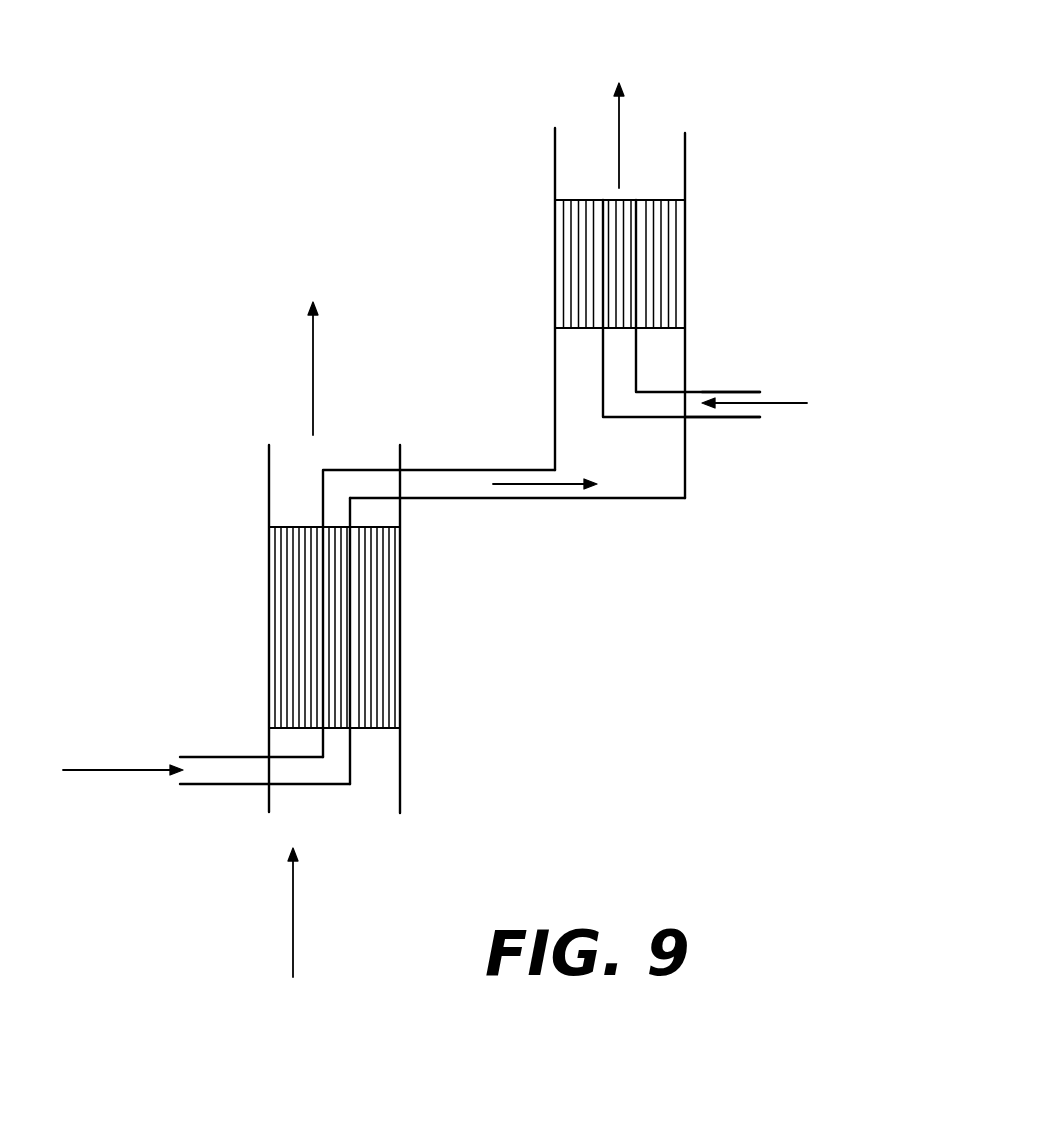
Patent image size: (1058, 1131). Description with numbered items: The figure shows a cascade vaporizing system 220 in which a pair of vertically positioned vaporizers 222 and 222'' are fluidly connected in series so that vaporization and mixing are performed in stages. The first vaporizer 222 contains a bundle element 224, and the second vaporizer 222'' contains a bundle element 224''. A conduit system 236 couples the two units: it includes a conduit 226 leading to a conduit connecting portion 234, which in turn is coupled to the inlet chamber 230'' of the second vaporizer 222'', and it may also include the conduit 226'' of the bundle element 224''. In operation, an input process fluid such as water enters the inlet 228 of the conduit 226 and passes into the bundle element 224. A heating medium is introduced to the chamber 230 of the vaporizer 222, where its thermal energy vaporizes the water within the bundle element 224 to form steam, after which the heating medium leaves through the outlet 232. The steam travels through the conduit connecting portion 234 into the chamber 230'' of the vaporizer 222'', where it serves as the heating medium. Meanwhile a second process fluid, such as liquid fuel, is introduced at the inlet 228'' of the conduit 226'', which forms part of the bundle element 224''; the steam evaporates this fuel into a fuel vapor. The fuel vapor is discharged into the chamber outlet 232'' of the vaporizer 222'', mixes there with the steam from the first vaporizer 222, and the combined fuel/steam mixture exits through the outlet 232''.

The steam generation and fuel vaporization system 220 is at (340, 172).
The vaporizer 222 is at (338, 655).
The bundle element 224 is at (291, 600).
The conduit 226 is at (273, 803).
The inlet 228 is at (222, 800).
The chamber 230 is at (375, 711).
The outlet 232 is at (439, 572).
The conduit connecting portion 234 is at (492, 458).
The conduit system 236 is at (632, 516).
The vaporizer 222'' is at (696, 289).
The bundle element 224'' is at (663, 241).
The conduit 226'' is at (724, 452).
The inlet 228'' is at (769, 371).
The inlet chamber 230'' is at (674, 334).
The chamber outlet 232'' is at (681, 248).